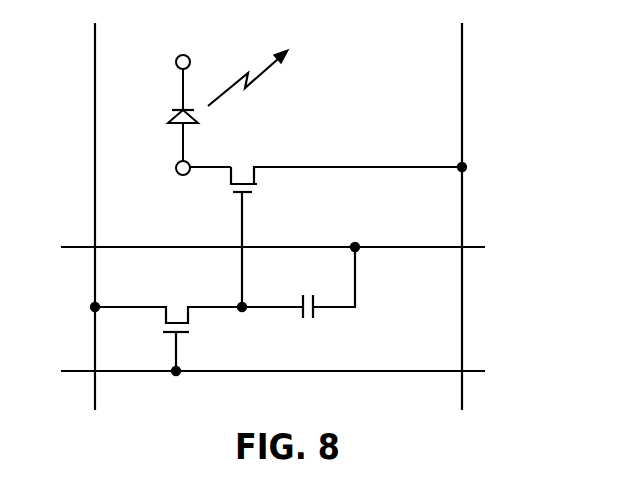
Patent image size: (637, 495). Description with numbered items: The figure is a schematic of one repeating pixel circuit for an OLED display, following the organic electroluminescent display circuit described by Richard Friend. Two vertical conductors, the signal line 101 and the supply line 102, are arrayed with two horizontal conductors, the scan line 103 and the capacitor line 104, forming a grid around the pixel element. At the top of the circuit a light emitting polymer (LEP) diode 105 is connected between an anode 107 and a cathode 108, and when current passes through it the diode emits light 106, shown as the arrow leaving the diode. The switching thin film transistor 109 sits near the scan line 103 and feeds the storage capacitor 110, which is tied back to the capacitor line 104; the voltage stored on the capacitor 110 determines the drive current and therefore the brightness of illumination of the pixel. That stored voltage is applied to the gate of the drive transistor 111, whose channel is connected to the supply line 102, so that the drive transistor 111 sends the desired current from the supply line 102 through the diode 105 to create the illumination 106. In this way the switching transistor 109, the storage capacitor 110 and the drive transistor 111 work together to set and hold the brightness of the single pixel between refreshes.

The signal line 101 is at (105, 205).
The supply line 102 is at (470, 205).
The scan line 103 is at (294, 371).
The capacitor line 104 is at (294, 246).
The light emitting polymer diode 105 is at (172, 119).
The light 106 is at (268, 69).
The anode 107 is at (177, 172).
The cathode 108 is at (183, 55).
The switching thin film transistor 109 is at (177, 316).
The storage capacitor 110 is at (315, 314).
The drive transistor 111 is at (253, 172).